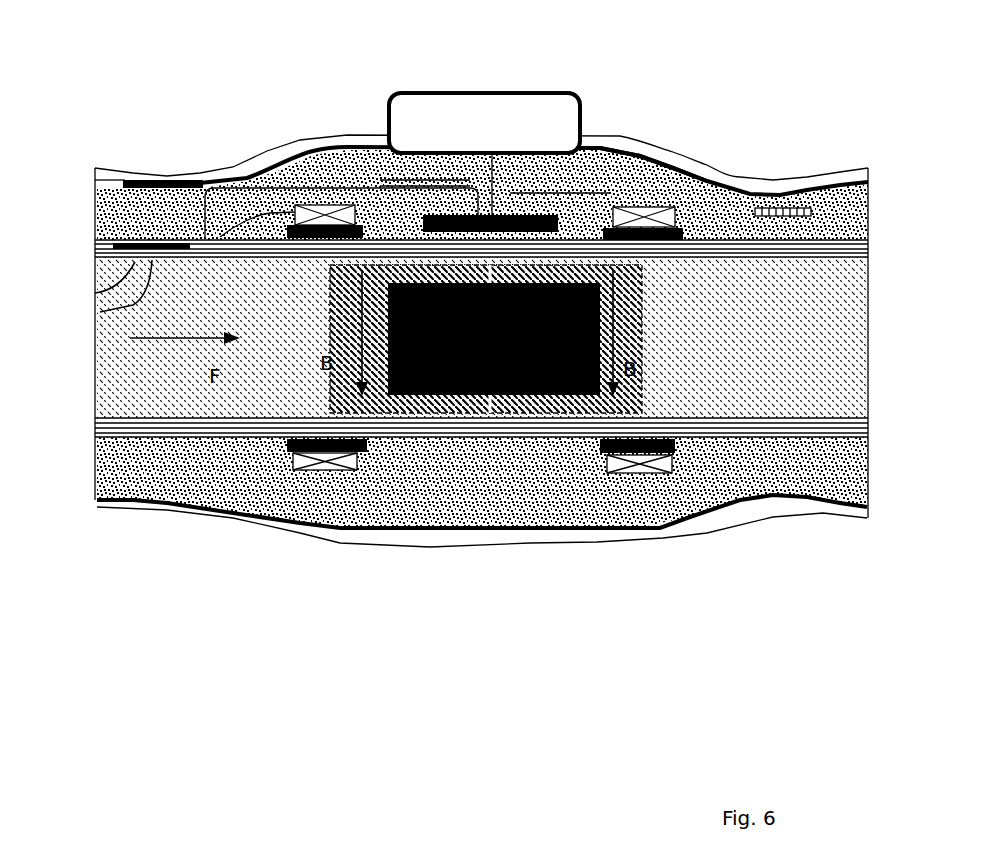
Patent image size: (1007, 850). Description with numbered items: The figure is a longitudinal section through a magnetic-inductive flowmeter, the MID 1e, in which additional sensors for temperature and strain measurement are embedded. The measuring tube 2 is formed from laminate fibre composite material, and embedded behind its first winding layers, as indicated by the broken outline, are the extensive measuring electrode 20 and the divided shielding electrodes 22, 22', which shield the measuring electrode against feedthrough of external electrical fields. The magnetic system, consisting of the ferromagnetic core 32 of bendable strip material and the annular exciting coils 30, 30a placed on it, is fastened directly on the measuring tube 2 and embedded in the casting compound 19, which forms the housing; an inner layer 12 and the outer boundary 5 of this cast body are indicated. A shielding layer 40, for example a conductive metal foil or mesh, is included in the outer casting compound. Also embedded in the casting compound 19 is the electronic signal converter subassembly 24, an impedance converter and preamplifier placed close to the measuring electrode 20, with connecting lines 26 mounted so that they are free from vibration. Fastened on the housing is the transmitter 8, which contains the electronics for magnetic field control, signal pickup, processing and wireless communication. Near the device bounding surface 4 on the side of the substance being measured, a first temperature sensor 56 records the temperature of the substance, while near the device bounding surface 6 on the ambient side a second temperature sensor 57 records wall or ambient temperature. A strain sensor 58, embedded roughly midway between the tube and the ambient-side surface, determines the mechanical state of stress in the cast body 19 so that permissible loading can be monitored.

The flow measuring device 1e is at (532, 772).
The measuring tube 2 is at (93, 432).
The device bounding surface on the side of the substance being measured 4 is at (97, 313).
The outer skin 5 is at (93, 448).
The device bounding surface on the ambient side 6 is at (252, 162).
The transmitter 8 is at (497, 123).
The inner layer 12 is at (320, 165).
The casting compound 19 is at (418, 507).
The measuring electrode 20 is at (600, 330).
The divided shielding electrode 22 is at (536, 339).
The divided shielding electrode 22' is at (312, 333).
The electronic signal converter subassembly 24 is at (337, 152).
The electrode leads 26 is at (388, 187).
The exciting coil 30 is at (295, 212).
The exciting coil 30a is at (325, 472).
The ferromagnetic core 32 is at (313, 236).
The shielding layer 40 is at (643, 150).
The first temperature sensor 56 is at (95, 293).
The second temperature sensor 57 is at (163, 180).
The strain sensor 58 is at (803, 210).